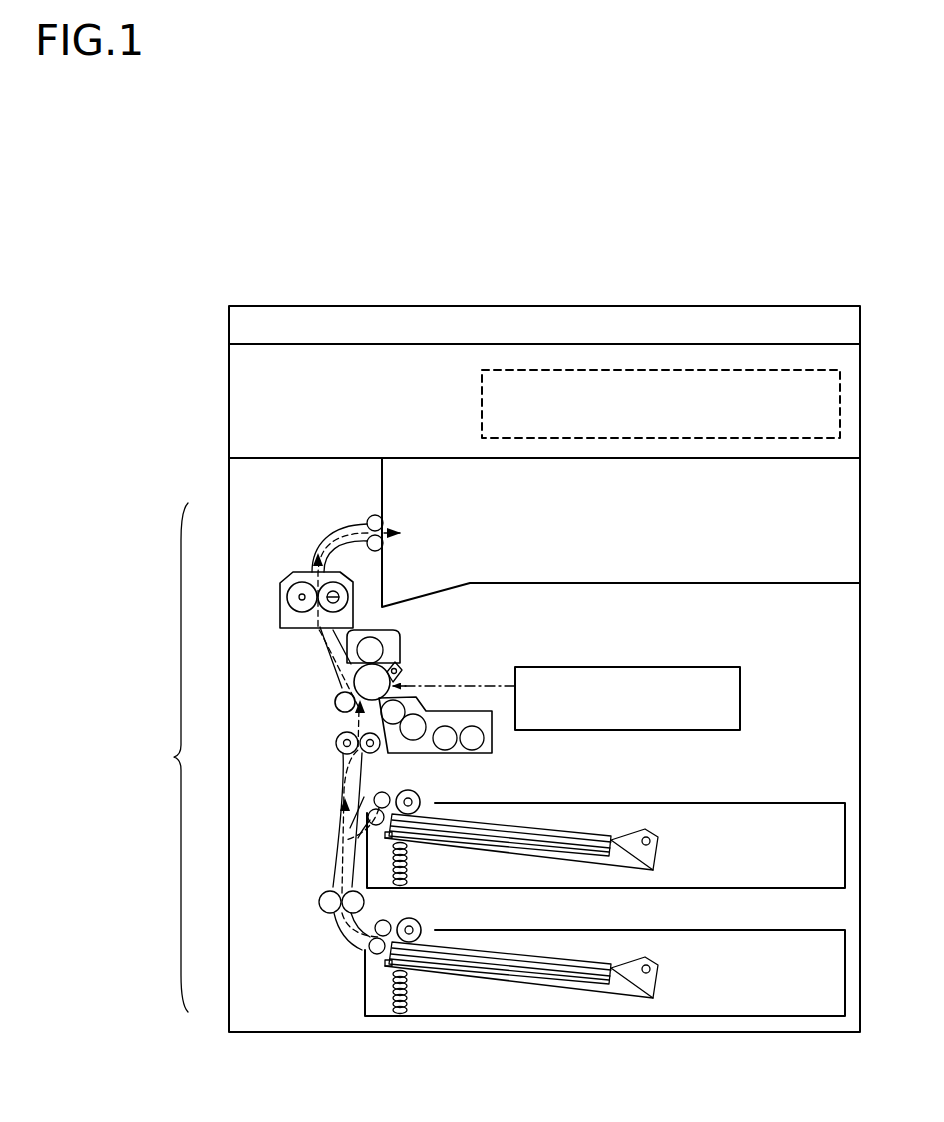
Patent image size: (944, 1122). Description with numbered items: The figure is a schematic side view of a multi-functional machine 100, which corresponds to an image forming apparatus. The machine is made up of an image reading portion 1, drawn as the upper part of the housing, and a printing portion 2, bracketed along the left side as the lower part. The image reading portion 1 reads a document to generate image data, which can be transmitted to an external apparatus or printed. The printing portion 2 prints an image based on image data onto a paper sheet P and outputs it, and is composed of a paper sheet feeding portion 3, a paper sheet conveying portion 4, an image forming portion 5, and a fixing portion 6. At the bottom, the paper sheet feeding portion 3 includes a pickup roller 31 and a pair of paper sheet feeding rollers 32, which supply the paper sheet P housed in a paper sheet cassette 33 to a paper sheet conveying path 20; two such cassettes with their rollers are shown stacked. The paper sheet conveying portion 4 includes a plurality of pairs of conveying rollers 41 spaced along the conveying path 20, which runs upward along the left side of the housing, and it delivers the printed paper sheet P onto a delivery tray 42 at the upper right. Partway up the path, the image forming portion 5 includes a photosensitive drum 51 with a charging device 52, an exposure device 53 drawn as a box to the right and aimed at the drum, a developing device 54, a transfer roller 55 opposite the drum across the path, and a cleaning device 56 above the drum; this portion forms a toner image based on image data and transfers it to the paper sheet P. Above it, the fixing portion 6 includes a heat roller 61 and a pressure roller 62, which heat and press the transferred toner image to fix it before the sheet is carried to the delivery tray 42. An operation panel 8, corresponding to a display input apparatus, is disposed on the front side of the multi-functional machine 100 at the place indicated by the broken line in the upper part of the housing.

The multi-functional machine 100 is at (243, 290).
The image reading portion 1 is at (228, 385).
The printing portion 2 is at (172, 757).
The paper sheet feeding portion 3 is at (365, 977).
The paper sheet conveying portion 4 is at (318, 893).
The image forming portion 5 is at (330, 706).
The fixing portion 6 is at (280, 580).
The operation panel 8 is at (483, 388).
The paper sheet conveying path 20 is at (333, 820).
The pickup roller 31 is at (419, 797).
The pair of paper sheet feeding rollers 32 is at (384, 793).
The paper sheet cassette 33 is at (778, 803).
The pair of conveying rollers 41 is at (372, 517).
The delivery tray 42 is at (690, 583).
The photosensitive drum 51 is at (356, 680).
The charging device 52 is at (402, 668).
The exposure device 53 is at (612, 667).
The developing device 54 is at (488, 750).
The transfer roller 55 is at (336, 700).
The cleaning device 56 is at (393, 636).
The heat roller 61 is at (348, 597).
The pressure roller 62 is at (289, 597).
The paper sheet P is at (583, 828).